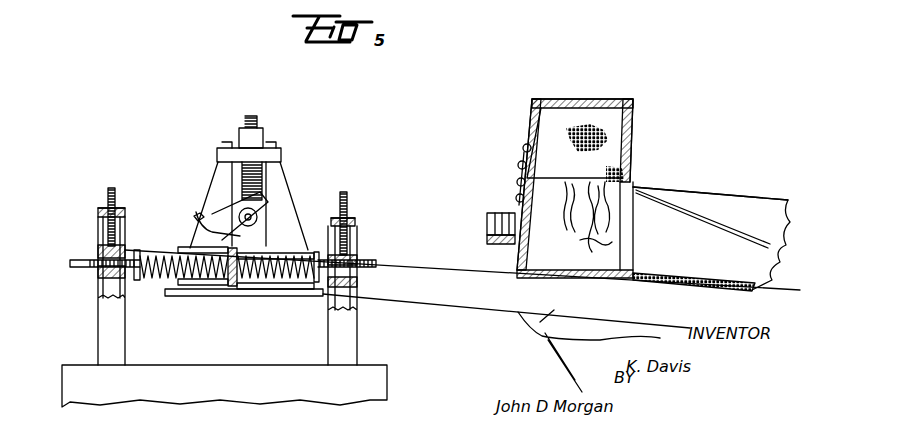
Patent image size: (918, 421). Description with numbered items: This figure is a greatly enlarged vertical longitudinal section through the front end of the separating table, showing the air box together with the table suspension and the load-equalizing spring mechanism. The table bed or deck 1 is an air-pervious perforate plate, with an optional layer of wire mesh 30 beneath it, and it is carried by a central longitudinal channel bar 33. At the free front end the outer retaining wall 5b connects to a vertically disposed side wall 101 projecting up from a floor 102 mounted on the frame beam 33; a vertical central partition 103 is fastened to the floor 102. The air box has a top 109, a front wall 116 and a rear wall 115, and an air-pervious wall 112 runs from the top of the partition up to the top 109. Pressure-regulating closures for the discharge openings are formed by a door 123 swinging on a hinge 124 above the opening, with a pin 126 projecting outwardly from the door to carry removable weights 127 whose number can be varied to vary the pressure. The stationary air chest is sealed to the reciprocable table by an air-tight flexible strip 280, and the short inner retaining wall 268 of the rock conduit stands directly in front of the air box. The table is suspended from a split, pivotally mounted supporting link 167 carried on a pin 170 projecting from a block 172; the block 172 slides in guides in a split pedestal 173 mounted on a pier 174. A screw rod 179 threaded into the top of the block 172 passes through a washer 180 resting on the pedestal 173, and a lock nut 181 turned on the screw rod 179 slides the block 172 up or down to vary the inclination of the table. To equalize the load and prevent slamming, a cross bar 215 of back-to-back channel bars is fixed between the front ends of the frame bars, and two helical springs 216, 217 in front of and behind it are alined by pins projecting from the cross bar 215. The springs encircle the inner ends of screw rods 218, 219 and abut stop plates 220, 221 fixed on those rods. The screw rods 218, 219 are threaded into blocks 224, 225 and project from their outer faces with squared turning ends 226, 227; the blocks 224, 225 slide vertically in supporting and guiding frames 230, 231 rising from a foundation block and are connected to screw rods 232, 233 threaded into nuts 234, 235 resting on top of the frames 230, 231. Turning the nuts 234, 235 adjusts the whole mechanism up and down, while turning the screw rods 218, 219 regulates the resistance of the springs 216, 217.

The bed or deck 1 is at (762, 266).
The layer of wire mesh 30 is at (735, 287).
The central longitudinal channel bar 33 is at (466, 302).
The side wall 101 is at (606, 226).
The floor 102 is at (562, 280).
The central partition 103 is at (612, 240).
The top 109 is at (575, 172).
The air pervious wall 112 is at (604, 126).
The rear wall 115 is at (632, 142).
The front wall 116 is at (536, 118).
The door 123 is at (516, 204).
The hinge 124 is at (523, 148).
The pin 126 is at (487, 222).
The removable weight 127 is at (487, 242).
The supporting link 167 is at (195, 216).
The pin 170 is at (238, 218).
The block 172 is at (258, 217).
The split pedestal 173 is at (280, 182).
The pier 174 is at (205, 352).
The screw rod 179 is at (244, 172).
The washer 180 is at (258, 152).
The lock nut 181 is at (263, 136).
The cross bar 215 is at (216, 292).
The helical spring 216 is at (166, 288).
The helical spring 217 is at (288, 288).
The screw rod 218 is at (125, 241).
The screw rod 219 is at (328, 240).
The stop plate 220 is at (137, 253).
The stop plate 221 is at (303, 250).
The block 224 is at (104, 283).
The block 225 is at (357, 286).
The squared turning end 226 is at (96, 258).
The squared turning end 227 is at (376, 268).
The supporting and guiding frame 230 is at (98, 300).
The supporting and guiding frame 231 is at (357, 338).
The screw rod 232 is at (123, 208).
The screw rod 233 is at (349, 205).
The nut 234 is at (98, 210).
The nut 235 is at (355, 221).
The inner retaining wall 268 is at (690, 228).
The flexible strip 280 is at (545, 334).
The outer retaining wall 5b is at (742, 208).